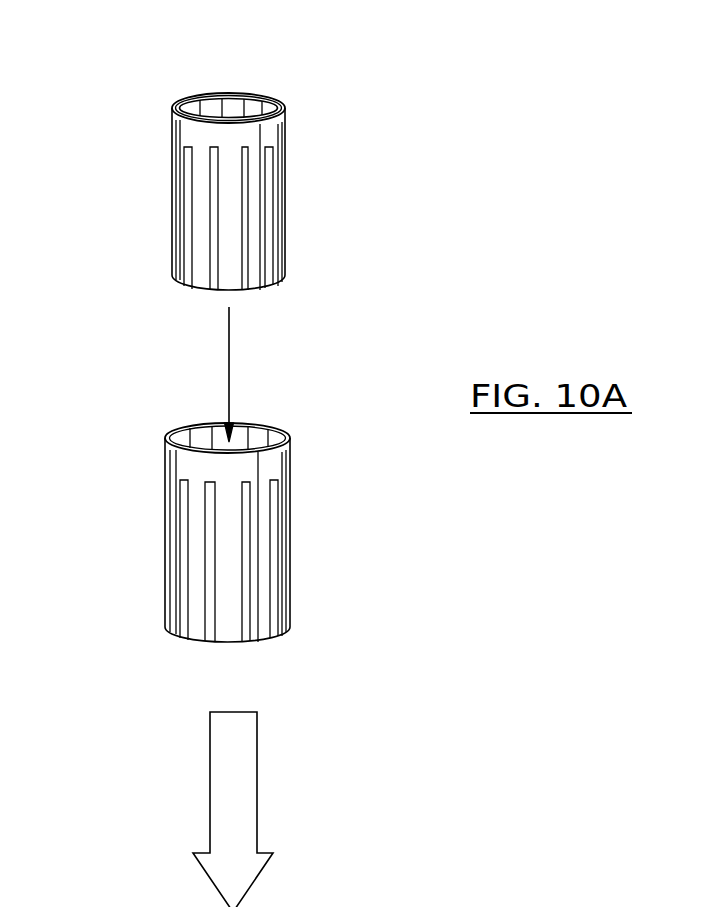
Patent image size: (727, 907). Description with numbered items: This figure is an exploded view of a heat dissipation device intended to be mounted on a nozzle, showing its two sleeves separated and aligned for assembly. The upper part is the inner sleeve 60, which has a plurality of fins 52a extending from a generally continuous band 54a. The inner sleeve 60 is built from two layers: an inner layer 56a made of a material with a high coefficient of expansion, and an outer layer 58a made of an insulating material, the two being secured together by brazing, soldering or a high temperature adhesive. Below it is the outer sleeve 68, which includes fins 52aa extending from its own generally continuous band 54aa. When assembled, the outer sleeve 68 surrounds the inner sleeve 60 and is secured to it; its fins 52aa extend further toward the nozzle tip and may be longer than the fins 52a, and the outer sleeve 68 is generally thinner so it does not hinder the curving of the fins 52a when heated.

The fins 52a is at (282, 270).
The generally continuous band 54a is at (183, 132).
The inner layer 56a is at (190, 97).
The outer layer 58a is at (283, 103).
The inner sleeve 60 is at (228, 159).
The outer sleeve 68 is at (225, 532).
The fins 52aa is at (287, 593).
The generally continuous band 54aa is at (177, 463).